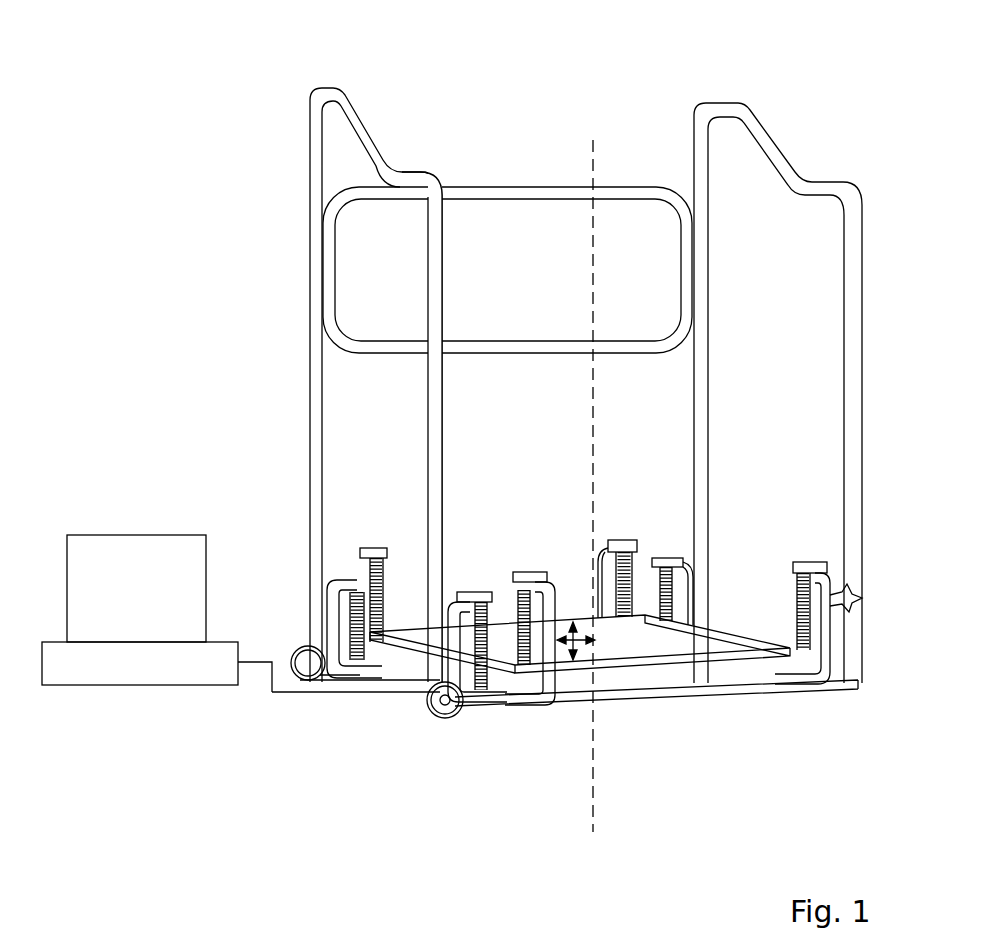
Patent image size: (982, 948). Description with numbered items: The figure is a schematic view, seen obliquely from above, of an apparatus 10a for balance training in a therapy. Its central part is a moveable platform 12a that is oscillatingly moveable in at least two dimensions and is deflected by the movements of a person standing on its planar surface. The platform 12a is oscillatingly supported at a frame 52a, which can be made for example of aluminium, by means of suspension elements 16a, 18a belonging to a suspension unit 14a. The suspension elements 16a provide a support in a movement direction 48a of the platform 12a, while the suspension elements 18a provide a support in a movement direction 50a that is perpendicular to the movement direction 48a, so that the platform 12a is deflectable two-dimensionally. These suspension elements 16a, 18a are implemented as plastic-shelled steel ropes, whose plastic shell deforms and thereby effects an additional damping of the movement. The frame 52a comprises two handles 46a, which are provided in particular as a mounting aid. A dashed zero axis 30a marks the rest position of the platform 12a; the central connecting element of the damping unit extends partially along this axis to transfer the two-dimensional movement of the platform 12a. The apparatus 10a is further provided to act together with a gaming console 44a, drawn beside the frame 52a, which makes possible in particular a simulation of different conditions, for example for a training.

The apparatus 10a is at (300, 348).
The moveable platform 12a is at (658, 668).
The suspension unit 14a is at (336, 566).
The suspension elements 16a is at (345, 664).
The suspension elements 18a is at (352, 553).
The zero axis 30a is at (595, 722).
The gaming console 44a is at (129, 672).
The handles 46a is at (318, 105).
The movement direction 48a is at (560, 692).
The movement direction 50a is at (583, 660).
The frame 52a is at (300, 257).